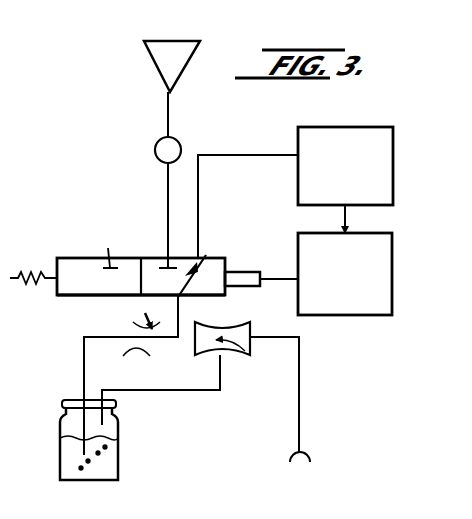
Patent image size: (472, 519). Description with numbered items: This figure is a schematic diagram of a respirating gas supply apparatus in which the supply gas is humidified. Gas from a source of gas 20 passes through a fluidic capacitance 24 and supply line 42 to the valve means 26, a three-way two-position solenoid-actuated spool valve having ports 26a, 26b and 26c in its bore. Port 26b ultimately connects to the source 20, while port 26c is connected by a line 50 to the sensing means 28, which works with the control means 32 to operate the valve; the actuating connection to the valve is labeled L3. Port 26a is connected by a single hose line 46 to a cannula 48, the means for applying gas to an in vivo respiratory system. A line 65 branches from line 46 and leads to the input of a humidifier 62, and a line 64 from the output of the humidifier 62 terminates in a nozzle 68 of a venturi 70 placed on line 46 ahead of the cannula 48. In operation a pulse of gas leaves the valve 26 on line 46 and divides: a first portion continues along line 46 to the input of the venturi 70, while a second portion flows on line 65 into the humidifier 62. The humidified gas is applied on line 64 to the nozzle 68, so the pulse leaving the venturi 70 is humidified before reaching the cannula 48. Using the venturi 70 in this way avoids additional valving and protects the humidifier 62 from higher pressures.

The source of gas 20 is at (186, 66).
The fluidic capacitance 24 is at (155, 150).
The supply line 42 is at (166, 191).
The line 50 is at (237, 155).
The sensing means 28 is at (330, 127).
The control means 32 is at (360, 315).
The valve means 26 is at (55, 258).
The port 26a is at (96, 298).
The port 26b is at (100, 293).
The port 26c is at (220, 247).
The control line L3 is at (279, 294).
The line 46 is at (178, 310).
The cannula 48 is at (309, 457).
The nozzle 68 is at (240, 357).
The venturi 70 is at (203, 357).
The line 64 is at (165, 392).
The line 65 is at (84, 383).
The humidifier 62 is at (60, 461).